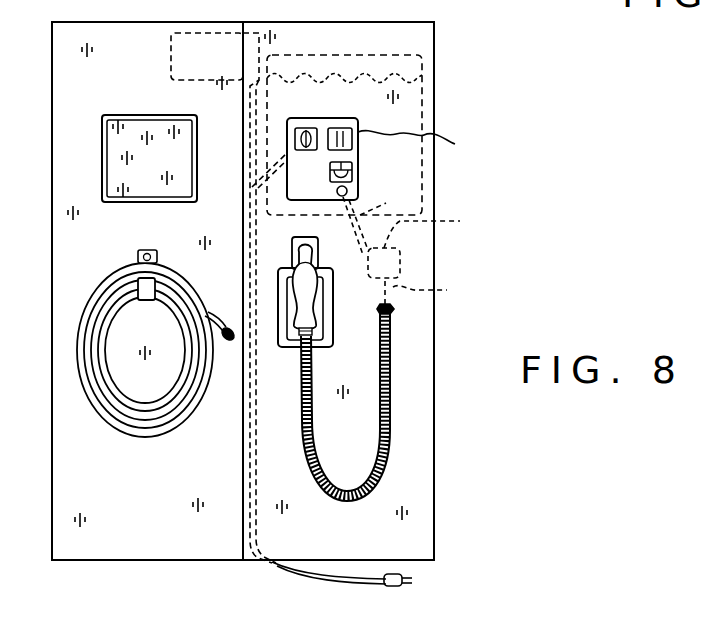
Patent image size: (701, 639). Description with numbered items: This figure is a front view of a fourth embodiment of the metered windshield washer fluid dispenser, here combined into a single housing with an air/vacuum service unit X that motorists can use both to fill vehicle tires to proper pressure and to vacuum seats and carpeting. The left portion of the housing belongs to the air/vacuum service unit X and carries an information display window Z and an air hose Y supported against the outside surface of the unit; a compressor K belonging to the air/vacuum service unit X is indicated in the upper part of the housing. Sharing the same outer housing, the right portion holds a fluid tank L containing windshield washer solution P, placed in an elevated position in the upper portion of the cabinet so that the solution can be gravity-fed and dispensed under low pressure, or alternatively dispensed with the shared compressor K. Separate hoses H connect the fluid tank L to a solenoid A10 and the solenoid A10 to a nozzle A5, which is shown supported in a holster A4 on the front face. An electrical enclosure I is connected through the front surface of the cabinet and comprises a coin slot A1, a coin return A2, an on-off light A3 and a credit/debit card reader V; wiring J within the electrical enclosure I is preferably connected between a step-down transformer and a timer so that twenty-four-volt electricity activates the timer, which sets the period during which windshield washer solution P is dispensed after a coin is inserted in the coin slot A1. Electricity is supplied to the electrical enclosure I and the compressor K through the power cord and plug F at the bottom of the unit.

The air/vacuum service unit X is at (64, 205).
The compressor K is at (201, 32).
The information display window Z is at (104, 128).
The air hose Y is at (89, 350).
The power cord and plug F is at (249, 483).
The windshield washer solution P is at (418, 113).
The fluid tank L is at (422, 73).
The credit/debit card reader V is at (303, 128).
The coin slot A1 is at (348, 128).
The coin return A2 is at (352, 171).
The on-off light A3 is at (349, 190).
The electrical enclosure I is at (410, 147).
The wiring J is at (377, 202).
The solenoid A10 is at (400, 268).
The holster A4 is at (328, 337).
The nozzle A5 is at (318, 288).
The hoses H is at (400, 440).